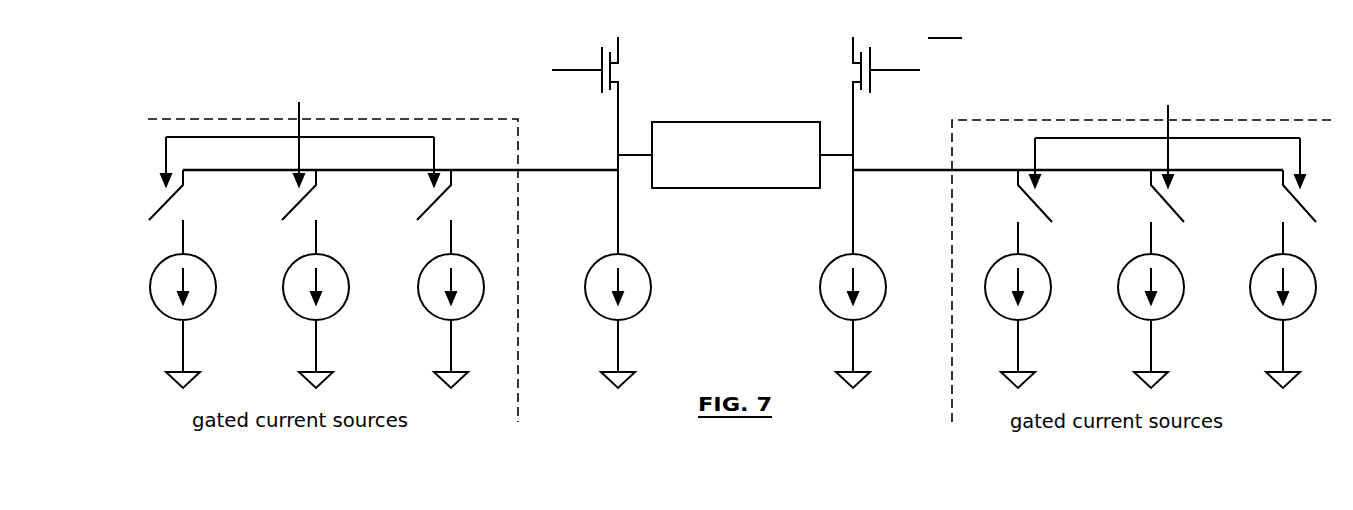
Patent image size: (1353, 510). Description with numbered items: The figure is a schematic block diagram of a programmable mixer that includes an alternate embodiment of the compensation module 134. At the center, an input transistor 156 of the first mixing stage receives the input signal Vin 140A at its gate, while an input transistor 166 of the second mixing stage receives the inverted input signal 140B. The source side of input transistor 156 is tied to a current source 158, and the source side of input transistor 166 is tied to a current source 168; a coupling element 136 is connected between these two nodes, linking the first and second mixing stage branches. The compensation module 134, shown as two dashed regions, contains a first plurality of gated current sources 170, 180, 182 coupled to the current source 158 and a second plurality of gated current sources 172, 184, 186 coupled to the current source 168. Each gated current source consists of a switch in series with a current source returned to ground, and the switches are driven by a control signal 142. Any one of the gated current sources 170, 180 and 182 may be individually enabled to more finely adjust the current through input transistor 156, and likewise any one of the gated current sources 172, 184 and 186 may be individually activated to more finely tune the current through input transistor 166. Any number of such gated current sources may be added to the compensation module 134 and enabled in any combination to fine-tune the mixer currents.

The compensation module 134 is at (740, 256).
The coupling element 136 is at (735, 155).
The input signal Vin 140A is at (548, 70).
The inverted input signal 140B is at (928, 68).
The control signal 142 is at (733, 115).
The input transistor 156 is at (635, 103).
The current source 158 is at (626, 279).
The input transistor 166 is at (836, 103).
The current source 168 is at (827, 279).
The gated current source 170 is at (459, 279).
The gated current source 172 is at (1027, 279).
The gated current source 180 is at (325, 279).
The gated current source 182 is at (191, 279).
The gated current source 184 is at (1142, 279).
The gated current source 186 is at (1275, 279).